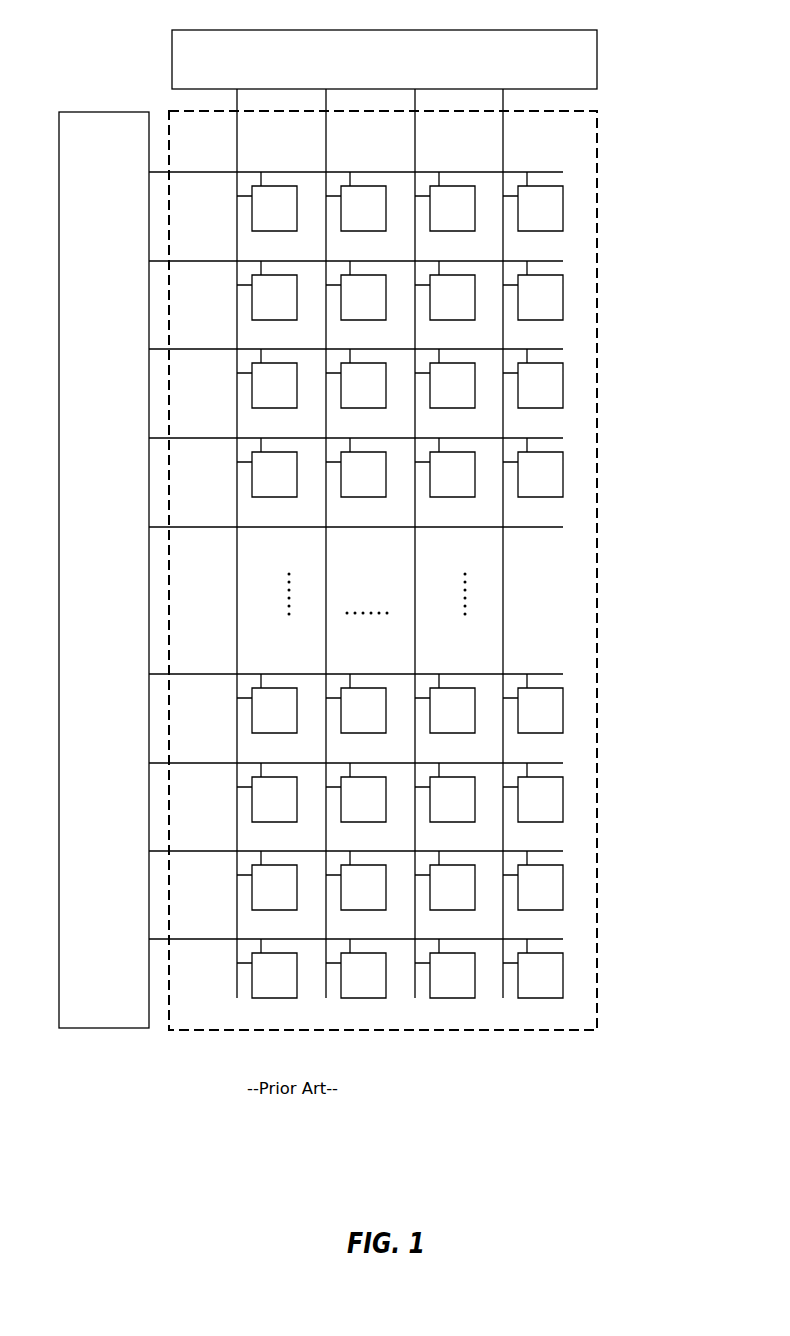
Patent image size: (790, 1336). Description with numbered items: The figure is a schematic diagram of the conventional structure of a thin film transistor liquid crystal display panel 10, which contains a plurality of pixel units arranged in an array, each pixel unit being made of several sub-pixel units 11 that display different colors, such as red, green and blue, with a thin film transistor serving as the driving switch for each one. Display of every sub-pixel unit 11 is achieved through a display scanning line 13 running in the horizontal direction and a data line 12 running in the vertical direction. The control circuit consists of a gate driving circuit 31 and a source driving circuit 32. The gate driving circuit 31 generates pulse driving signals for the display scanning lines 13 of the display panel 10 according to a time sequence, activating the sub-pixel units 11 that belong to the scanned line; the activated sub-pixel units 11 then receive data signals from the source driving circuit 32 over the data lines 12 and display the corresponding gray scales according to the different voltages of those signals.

The display panel 10 is at (597, 156).
The sub-pixel unit 11 is at (549, 208).
The data line 12 is at (503, 128).
The display scanning line 13 is at (556, 348).
The gate driving circuit 31 is at (100, 112).
The source driving circuit 32 is at (597, 62).